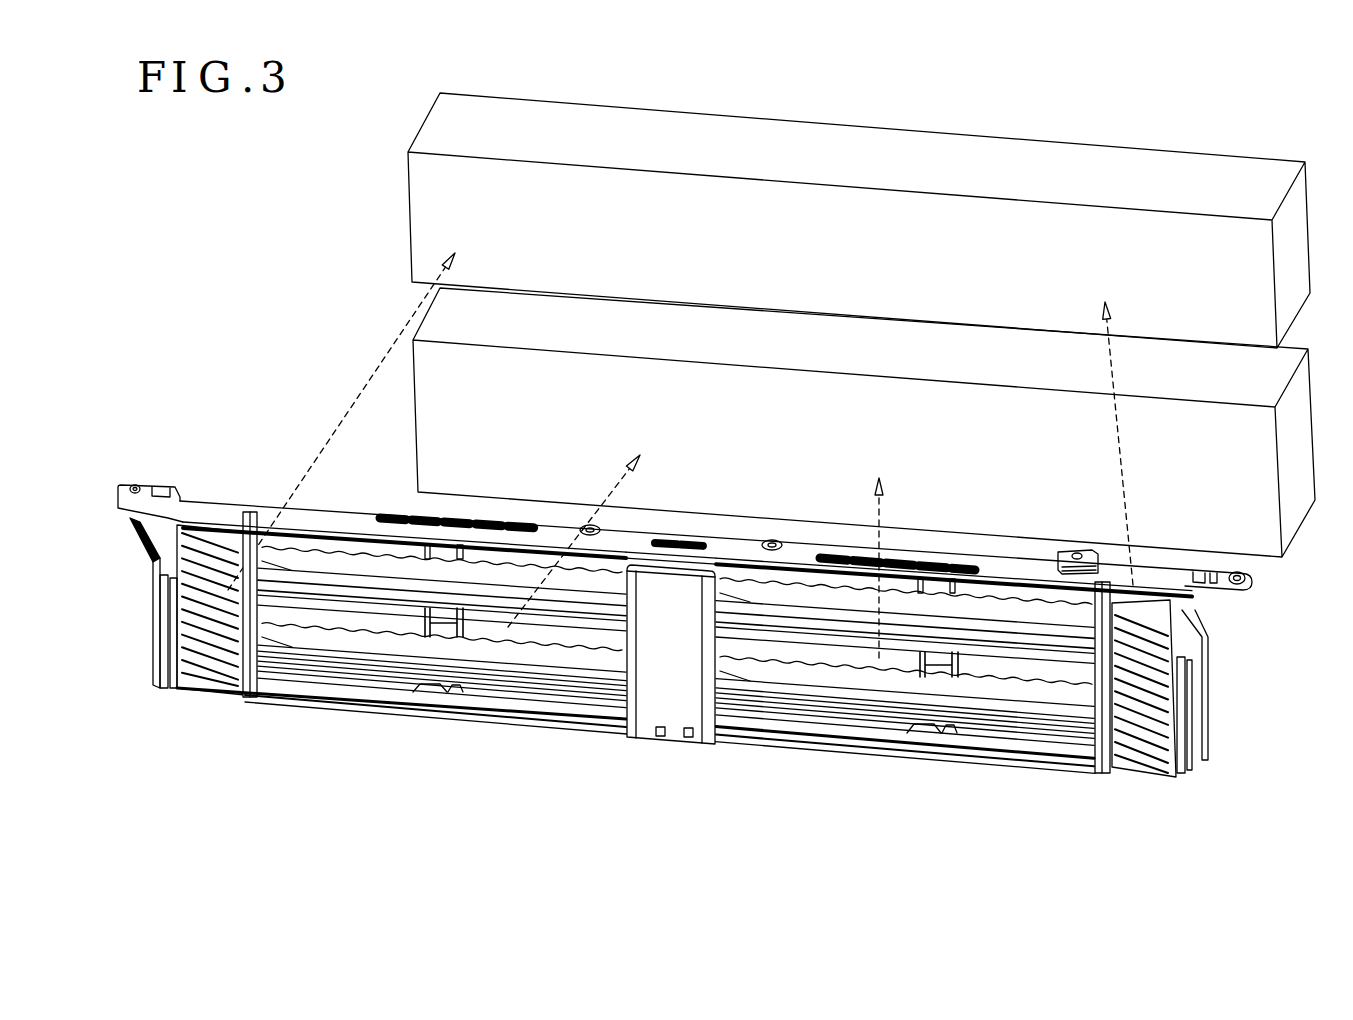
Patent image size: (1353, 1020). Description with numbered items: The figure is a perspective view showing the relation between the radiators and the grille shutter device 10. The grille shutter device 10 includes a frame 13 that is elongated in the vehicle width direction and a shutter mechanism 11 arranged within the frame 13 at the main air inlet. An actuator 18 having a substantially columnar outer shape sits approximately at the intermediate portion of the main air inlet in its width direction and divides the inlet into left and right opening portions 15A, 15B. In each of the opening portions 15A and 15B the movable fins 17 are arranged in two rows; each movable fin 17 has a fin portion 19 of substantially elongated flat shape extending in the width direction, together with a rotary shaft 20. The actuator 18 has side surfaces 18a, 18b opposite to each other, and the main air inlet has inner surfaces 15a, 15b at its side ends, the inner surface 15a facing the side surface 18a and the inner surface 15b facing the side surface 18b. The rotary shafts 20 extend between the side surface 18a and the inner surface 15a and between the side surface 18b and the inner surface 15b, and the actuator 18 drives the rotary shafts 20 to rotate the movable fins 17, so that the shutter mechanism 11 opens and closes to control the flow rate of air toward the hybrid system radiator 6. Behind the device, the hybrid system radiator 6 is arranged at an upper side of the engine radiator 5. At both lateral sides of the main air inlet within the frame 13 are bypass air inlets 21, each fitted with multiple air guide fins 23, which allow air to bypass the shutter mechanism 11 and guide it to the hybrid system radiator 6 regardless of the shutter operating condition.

The engine radiator 5 is at (413, 389).
The hybrid system radiator 6 is at (408, 211).
The grille shutter device 10 is at (213, 414).
The shutter mechanism 11 is at (585, 634).
The frame 13 is at (1253, 577).
The opening portion 15A is at (795, 582).
The opening portion 15B is at (537, 560).
The inner surface 15a is at (1093, 759).
The inner surface 15b is at (260, 697).
The movable fin 17 is at (405, 468).
The actuator 18 is at (673, 736).
The side surface 18a is at (720, 729).
The side surface 18b is at (630, 725).
The fin portion 19 is at (310, 556).
The rotary shaft 20 is at (360, 576).
The bypass air inlet 21 is at (223, 635).
The air guide fin 23 is at (192, 648).